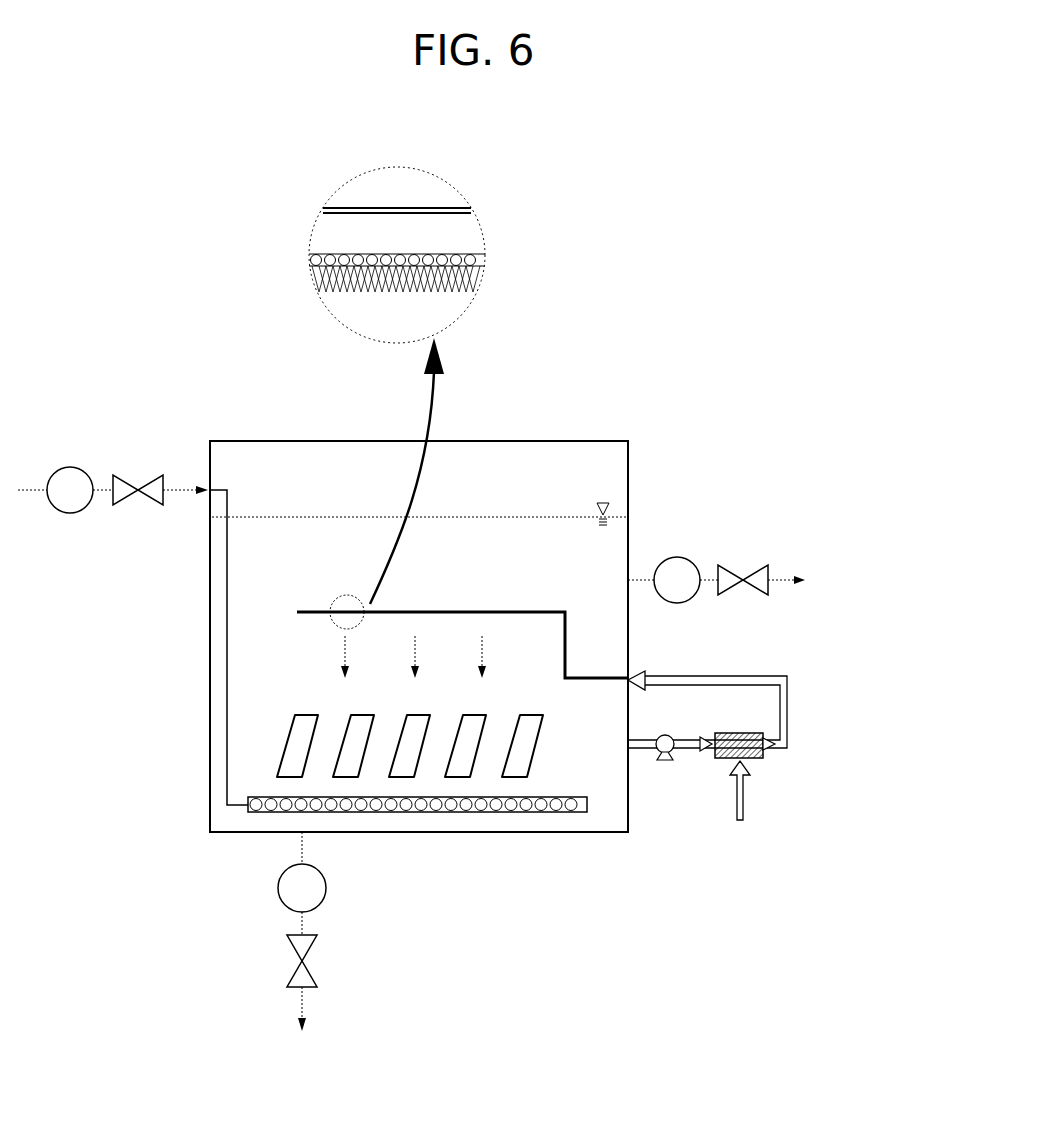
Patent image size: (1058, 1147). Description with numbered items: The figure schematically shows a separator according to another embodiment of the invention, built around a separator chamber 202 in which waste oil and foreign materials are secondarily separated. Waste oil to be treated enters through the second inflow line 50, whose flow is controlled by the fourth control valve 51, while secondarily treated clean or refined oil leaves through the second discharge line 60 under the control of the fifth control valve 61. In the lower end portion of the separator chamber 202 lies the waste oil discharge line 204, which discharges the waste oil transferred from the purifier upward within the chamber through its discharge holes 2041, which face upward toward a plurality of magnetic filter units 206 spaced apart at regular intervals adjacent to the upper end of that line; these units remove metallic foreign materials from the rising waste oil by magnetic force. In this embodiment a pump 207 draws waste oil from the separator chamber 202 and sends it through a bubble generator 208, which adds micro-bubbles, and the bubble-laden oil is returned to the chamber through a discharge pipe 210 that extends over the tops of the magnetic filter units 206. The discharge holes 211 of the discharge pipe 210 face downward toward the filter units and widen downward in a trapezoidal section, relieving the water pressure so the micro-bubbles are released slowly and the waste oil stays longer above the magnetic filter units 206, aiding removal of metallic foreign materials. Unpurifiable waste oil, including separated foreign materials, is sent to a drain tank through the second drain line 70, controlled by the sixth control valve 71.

The discharge pipe 210 is at (350, 207).
The discharge holes 211 is at (326, 258).
The second inflow line 50 is at (173, 495).
The fourth control valve 51 is at (131, 476).
The second discharge line 60 is at (719, 572).
The fifth control valve 61 is at (736, 596).
The separator chamber 202 is at (209, 750).
The waste oil discharge line 204 is at (360, 833).
The discharge holes 2041 is at (448, 814).
The magnetic filter units 206 is at (533, 753).
The pump 207 is at (667, 762).
The bubble generator 208 is at (797, 772).
The second drain line 70 is at (303, 850).
The sixth control valve 71 is at (297, 965).